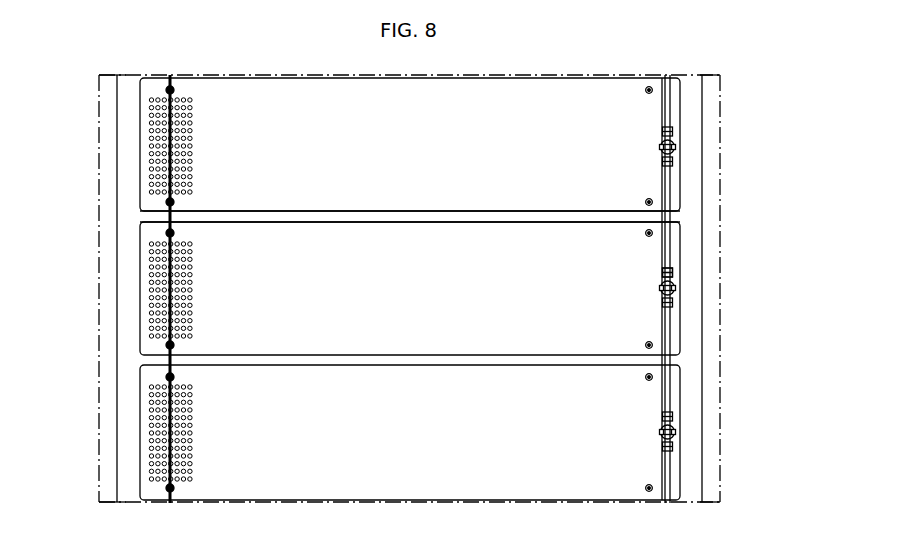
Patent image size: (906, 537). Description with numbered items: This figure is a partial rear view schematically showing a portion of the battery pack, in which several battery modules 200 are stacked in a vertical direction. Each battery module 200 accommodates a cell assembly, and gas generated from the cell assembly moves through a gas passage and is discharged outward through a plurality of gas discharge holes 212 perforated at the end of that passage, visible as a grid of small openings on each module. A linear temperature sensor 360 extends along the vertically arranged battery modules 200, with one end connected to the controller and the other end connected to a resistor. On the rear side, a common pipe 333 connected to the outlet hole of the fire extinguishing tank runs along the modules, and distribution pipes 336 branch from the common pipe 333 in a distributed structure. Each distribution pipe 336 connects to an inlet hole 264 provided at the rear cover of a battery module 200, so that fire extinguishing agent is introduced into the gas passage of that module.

The battery module 200 is at (614, 121).
The gas discharge holes 212 is at (150, 135).
The linear temperature sensor 360 is at (150, 217).
The common pipe 333 is at (667, 185).
The distribution pipe 336 is at (672, 280).
The inlet hole 264 is at (672, 288).